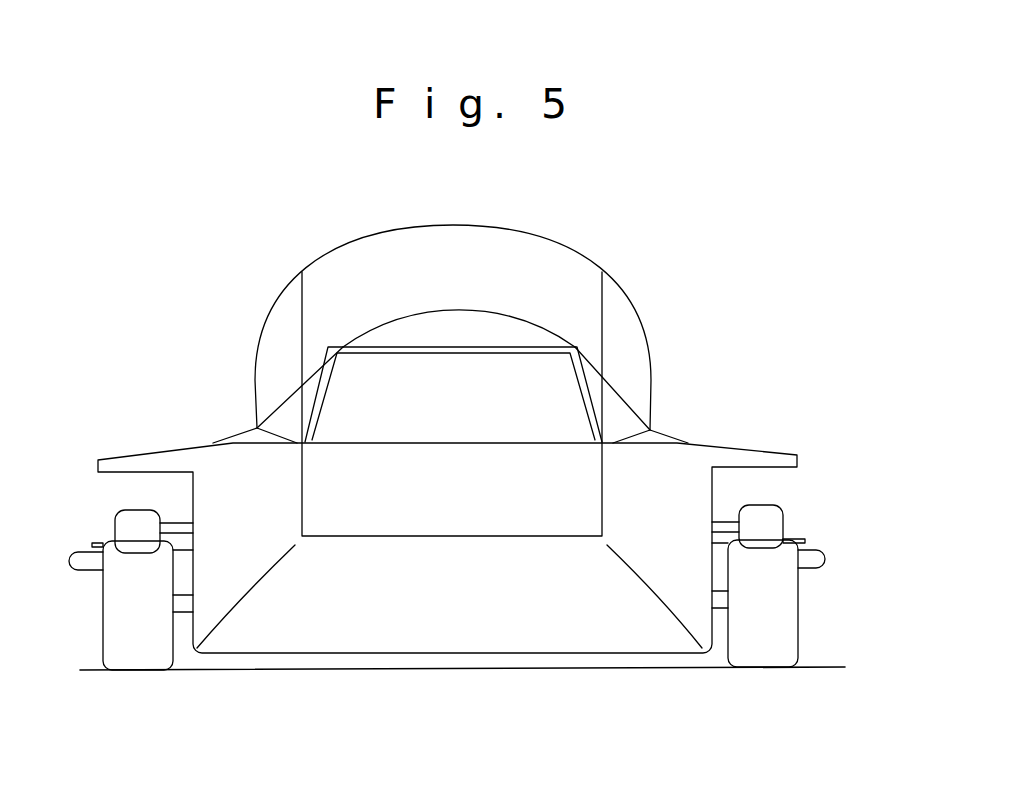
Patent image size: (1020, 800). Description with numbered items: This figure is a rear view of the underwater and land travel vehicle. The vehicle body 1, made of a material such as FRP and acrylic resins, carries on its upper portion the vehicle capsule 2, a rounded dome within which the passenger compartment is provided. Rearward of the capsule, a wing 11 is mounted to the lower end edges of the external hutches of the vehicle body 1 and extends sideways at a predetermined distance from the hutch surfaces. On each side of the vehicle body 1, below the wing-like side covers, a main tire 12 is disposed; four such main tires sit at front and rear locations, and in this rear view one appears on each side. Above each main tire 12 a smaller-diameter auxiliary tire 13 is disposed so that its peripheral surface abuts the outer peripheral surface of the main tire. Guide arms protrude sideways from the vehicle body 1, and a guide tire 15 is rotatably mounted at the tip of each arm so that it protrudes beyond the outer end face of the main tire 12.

The vehicle body 1 is at (693, 450).
The vehicle capsule 2 is at (620, 312).
The wing 11 is at (464, 353).
The main tire 12 is at (108, 625).
The auxiliary tire 13 is at (128, 517).
The guide tire 15 is at (82, 560).